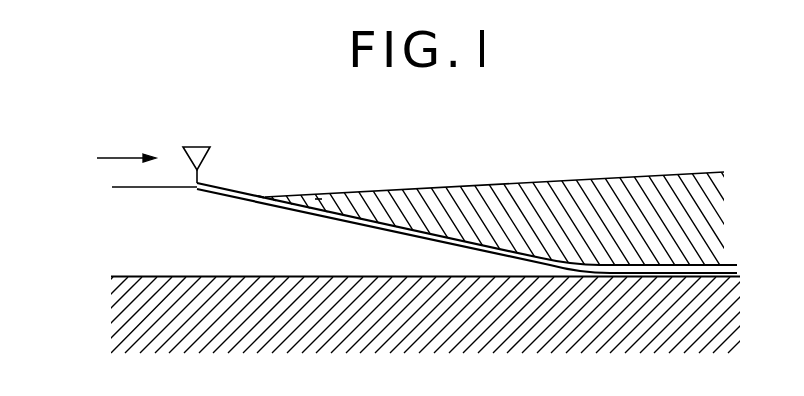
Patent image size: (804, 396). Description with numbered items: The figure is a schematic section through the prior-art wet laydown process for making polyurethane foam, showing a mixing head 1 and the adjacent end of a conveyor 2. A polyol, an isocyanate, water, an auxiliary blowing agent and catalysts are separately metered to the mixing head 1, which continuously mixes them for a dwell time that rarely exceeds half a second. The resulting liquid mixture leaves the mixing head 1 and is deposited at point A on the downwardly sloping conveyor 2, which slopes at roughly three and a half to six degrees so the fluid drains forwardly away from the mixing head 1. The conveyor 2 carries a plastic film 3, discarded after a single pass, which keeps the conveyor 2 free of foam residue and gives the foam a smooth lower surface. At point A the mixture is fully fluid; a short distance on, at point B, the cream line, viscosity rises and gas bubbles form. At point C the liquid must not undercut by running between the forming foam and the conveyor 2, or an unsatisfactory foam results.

The mixing head 1 is at (203, 146).
The conveyor 2 is at (363, 223).
The plastic film 3 is at (433, 230).
The point A is at (195, 189).
The point B is at (261, 198).
The point C is at (319, 199).